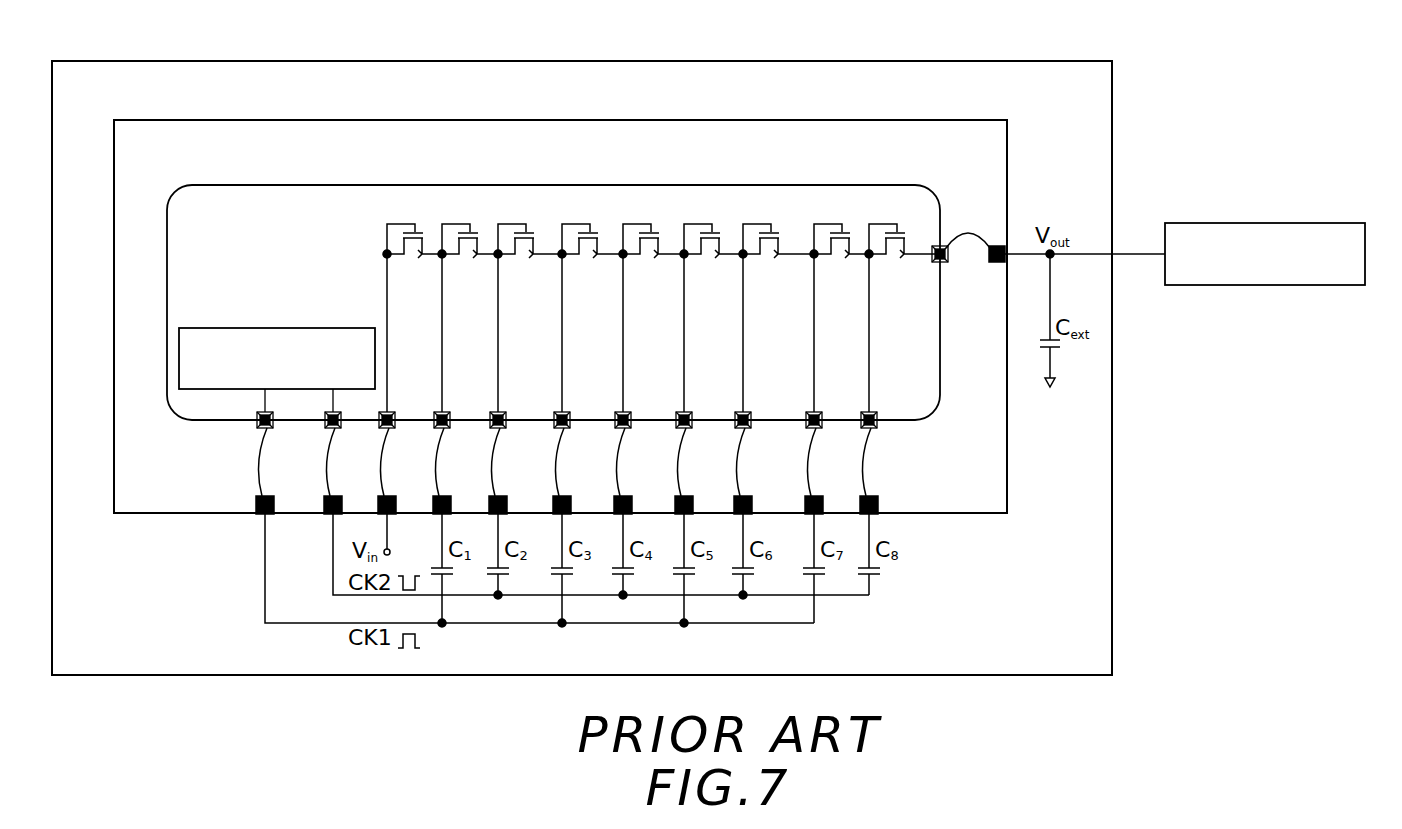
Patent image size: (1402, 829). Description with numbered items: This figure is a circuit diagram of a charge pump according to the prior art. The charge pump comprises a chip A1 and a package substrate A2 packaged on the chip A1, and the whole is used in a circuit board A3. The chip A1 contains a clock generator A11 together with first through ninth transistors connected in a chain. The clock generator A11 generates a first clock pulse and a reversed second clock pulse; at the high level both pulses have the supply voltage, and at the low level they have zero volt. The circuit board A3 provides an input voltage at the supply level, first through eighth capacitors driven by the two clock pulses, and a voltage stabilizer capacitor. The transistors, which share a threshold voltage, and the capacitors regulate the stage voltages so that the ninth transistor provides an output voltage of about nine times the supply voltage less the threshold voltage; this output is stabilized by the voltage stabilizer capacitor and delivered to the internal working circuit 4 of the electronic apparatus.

The circuit board A3 is at (782, 61).
The package substrate A2 is at (628, 120).
The chip A1 is at (286, 185).
The clock generator A11 is at (278, 328).
The working circuit 4 is at (1263, 223).